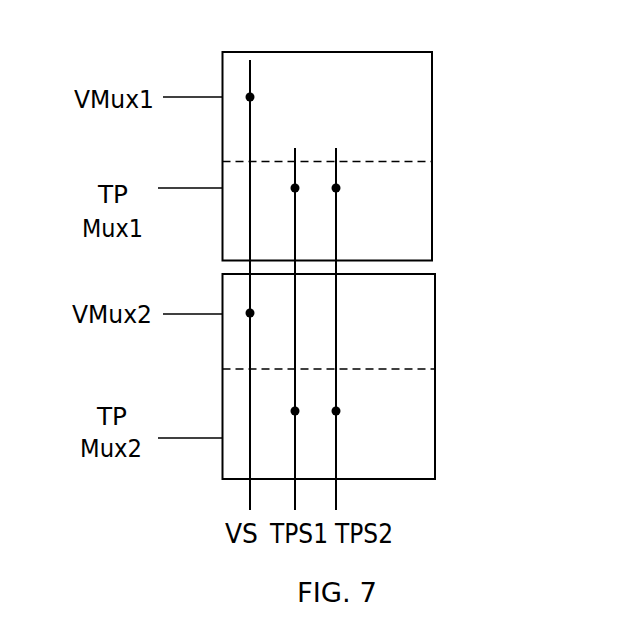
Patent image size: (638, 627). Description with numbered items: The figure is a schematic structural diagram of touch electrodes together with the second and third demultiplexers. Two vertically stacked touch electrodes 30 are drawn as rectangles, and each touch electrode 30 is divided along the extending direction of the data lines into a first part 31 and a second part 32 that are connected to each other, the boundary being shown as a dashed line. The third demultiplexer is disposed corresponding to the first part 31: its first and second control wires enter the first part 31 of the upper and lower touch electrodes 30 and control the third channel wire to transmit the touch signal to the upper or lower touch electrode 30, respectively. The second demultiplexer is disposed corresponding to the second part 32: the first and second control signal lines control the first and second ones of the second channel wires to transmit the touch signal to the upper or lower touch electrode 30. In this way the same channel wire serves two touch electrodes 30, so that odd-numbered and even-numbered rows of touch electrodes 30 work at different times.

The touch electrode 30 is at (393, 156).
The first part 31 is at (422, 106).
The second part 32 is at (366, 211).